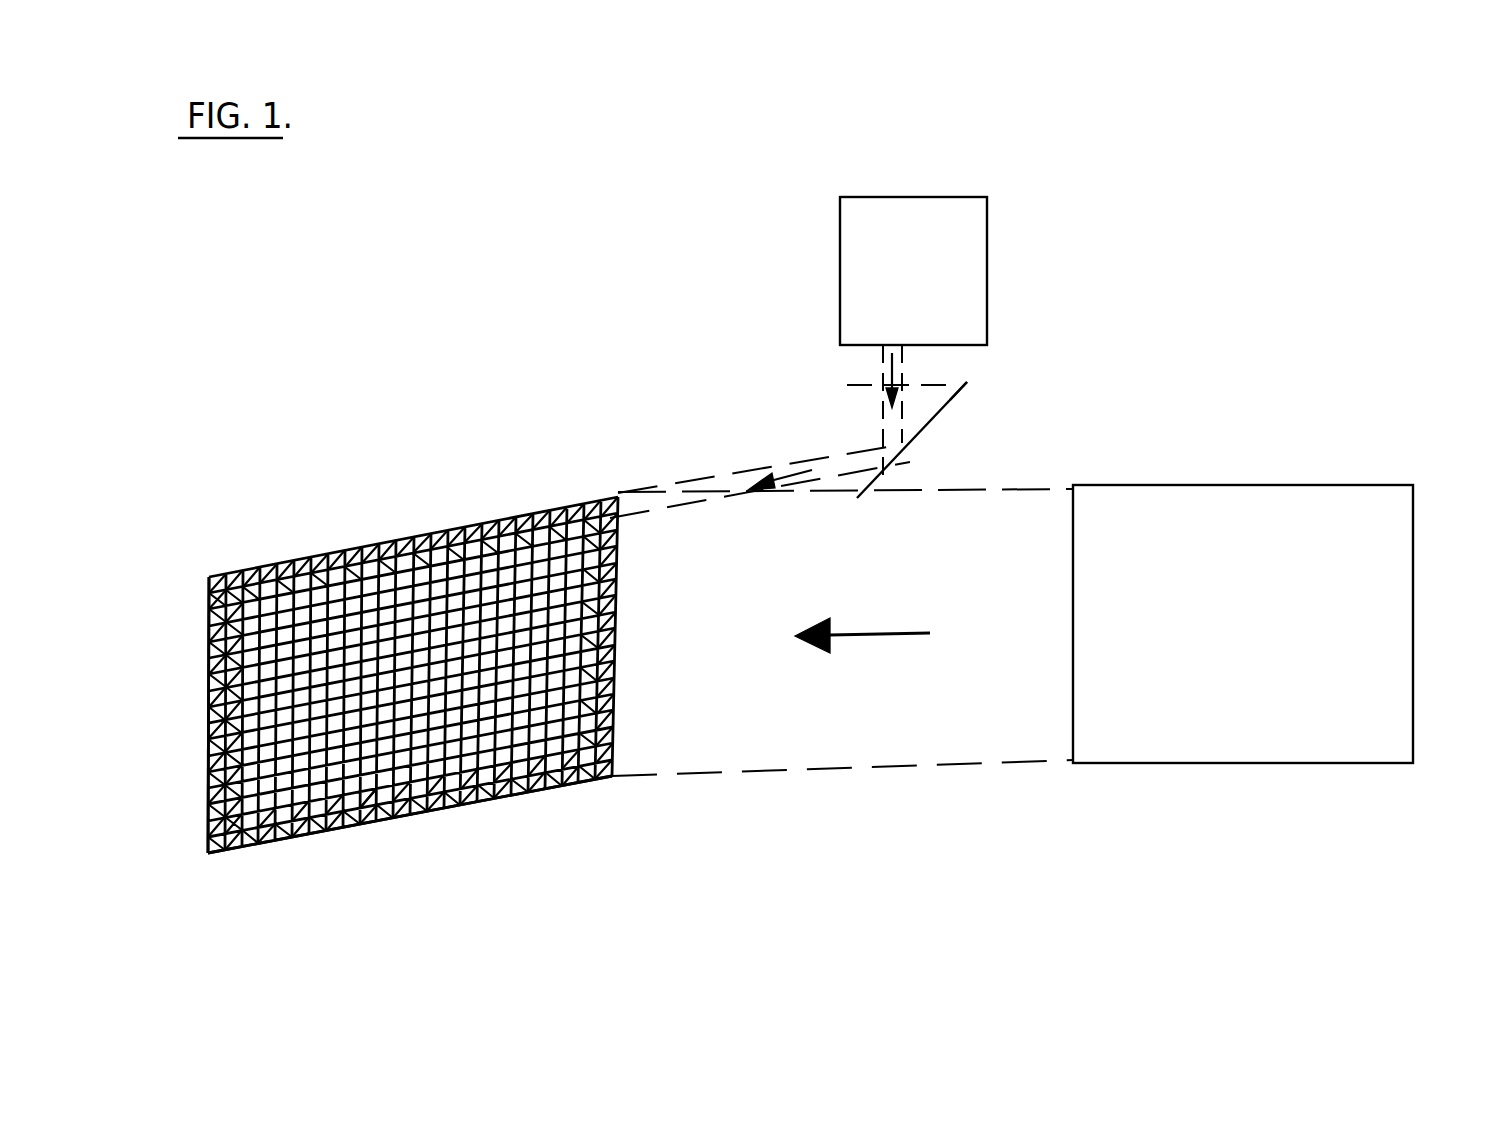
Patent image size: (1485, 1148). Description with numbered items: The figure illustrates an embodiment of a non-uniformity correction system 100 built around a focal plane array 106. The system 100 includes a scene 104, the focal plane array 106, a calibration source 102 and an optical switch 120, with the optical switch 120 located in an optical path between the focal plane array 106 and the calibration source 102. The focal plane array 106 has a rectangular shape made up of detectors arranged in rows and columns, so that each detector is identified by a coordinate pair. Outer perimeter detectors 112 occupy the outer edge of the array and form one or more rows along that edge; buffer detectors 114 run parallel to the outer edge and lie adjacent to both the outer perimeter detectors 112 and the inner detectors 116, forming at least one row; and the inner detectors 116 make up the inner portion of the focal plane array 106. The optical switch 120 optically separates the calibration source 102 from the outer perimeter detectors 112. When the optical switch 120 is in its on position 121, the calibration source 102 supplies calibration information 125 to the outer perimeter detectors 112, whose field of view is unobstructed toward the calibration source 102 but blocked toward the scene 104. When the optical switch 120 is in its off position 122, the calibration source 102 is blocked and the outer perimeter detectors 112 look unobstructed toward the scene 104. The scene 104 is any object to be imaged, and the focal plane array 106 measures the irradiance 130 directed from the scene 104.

The non-uniformity correction system 100 is at (1213, 284).
The calibration source 102 is at (987, 200).
The scene 104 is at (1412, 483).
The focal plane array 106 is at (250, 542).
The outer perimeter detectors 112 is at (258, 842).
The buffer detectors 114 is at (208, 800).
The inner detectors 116 is at (378, 790).
The optical switch 120 is at (930, 418).
The on position 121 is at (967, 380).
The off position 122 is at (835, 385).
The calibration information 125 is at (876, 372).
The irradiance 130 is at (872, 632).